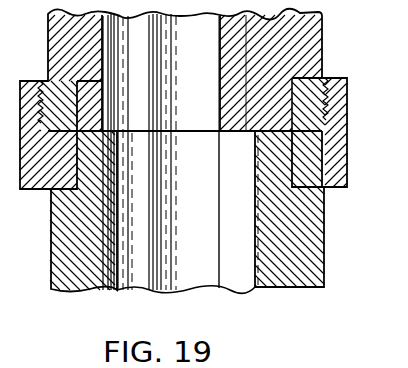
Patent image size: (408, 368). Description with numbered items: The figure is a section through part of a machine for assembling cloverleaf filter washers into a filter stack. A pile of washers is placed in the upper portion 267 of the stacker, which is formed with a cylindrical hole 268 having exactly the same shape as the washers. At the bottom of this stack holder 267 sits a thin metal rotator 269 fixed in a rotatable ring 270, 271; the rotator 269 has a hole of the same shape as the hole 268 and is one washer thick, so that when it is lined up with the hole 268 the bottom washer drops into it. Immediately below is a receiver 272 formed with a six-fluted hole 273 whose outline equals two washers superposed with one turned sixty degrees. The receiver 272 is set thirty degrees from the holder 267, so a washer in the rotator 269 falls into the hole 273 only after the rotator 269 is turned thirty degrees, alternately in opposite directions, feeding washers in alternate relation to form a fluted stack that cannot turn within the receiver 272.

The upper portion of the stacker 267 is at (307, 27).
The cylindrical hole 268 is at (131, 16).
The rotator 269 is at (204, 118).
The rotatable ring 270 is at (329, 88).
The rotatable ring 271 is at (341, 139).
The receiver 272 is at (312, 234).
The hole in the receiver 273 is at (241, 267).